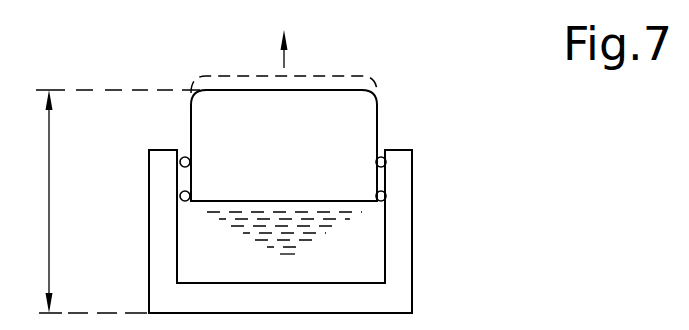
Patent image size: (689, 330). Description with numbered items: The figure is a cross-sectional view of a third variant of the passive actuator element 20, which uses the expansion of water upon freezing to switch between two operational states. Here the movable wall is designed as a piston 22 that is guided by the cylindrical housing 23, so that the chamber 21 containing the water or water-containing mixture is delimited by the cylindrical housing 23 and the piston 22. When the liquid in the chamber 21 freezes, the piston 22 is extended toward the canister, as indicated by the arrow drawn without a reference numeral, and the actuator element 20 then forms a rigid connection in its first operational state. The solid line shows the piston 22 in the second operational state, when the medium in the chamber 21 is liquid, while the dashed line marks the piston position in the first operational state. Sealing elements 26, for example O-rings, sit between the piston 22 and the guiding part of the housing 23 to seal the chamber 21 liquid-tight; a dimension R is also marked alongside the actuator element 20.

The passive actuator element 20 is at (440, 67).
The chamber 21 is at (368, 247).
The piston 22 is at (322, 75).
The cylindrical housing 23 is at (400, 293).
The sealing elements 26 is at (180, 163).
The dimension R is at (113, 201).